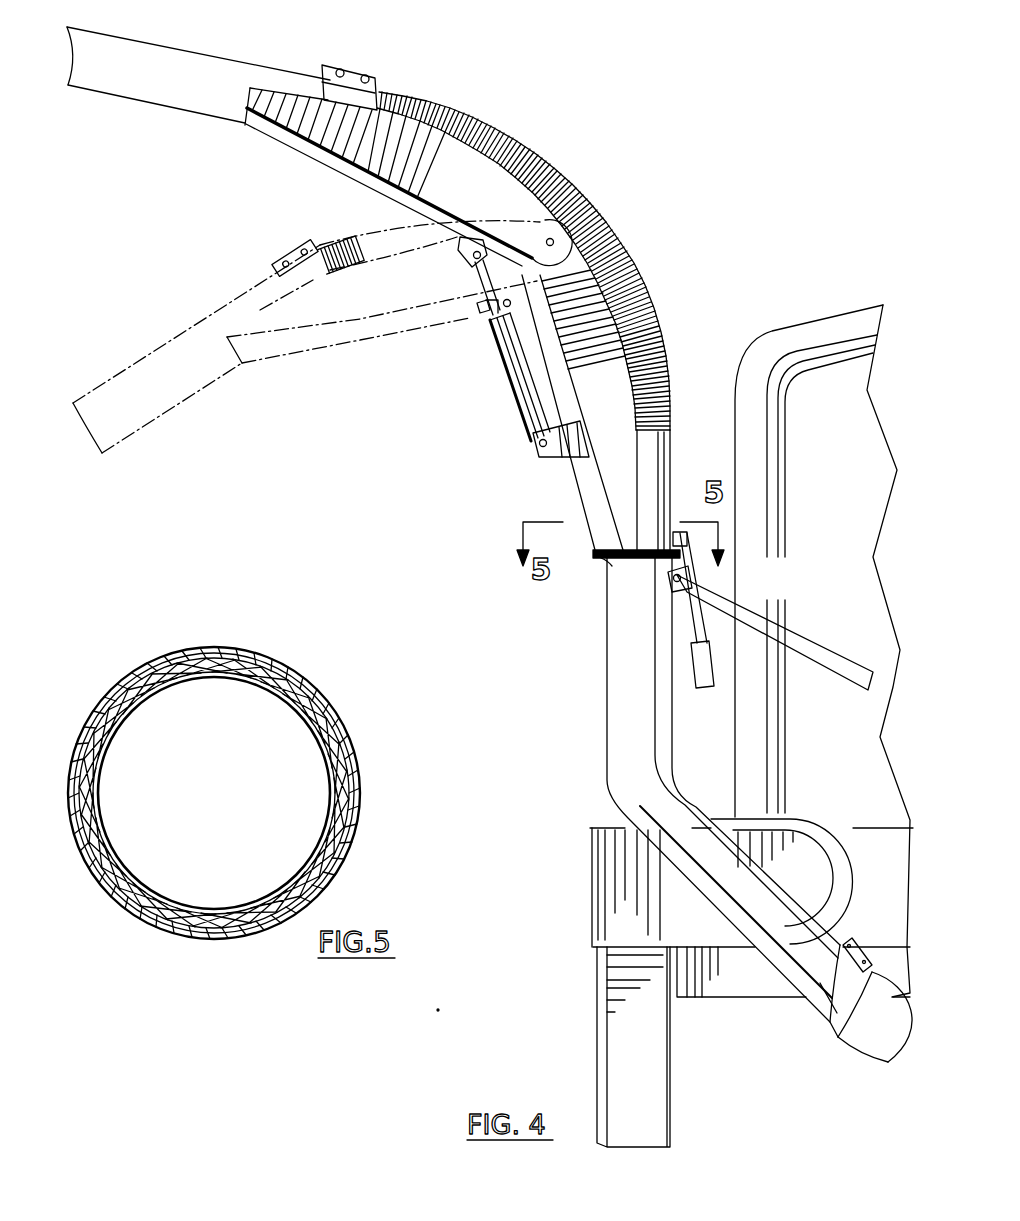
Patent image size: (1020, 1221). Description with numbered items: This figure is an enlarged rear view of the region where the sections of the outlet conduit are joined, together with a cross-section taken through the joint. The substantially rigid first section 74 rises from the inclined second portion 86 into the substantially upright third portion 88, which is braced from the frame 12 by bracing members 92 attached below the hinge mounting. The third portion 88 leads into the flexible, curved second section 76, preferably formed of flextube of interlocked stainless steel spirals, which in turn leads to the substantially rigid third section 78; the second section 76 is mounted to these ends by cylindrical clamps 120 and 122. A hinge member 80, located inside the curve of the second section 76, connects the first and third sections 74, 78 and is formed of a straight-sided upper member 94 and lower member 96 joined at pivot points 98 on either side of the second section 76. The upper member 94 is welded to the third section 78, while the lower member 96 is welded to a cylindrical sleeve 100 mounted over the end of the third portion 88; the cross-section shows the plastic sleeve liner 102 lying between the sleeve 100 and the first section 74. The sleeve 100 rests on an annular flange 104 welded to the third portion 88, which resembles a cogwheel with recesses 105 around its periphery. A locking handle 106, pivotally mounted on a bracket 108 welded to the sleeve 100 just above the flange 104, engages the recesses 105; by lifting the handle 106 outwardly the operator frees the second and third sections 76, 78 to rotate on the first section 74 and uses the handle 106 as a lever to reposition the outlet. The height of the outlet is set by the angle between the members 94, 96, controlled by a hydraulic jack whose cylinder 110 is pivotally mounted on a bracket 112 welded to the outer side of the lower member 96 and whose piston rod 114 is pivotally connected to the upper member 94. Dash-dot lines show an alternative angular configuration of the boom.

In FIG. 4, the third section 78 is at (203, 60).
In FIG. 4, the cylindrical clamp 122 is at (370, 77).
In FIG. 4, the upper member 94 is at (290, 150).
In FIG. 4, the pivot points 98 is at (546, 238).
In FIG. 4, the second section 76 is at (598, 220).
In FIG. 4, the piston rod 114 is at (482, 310).
In FIG. 4, the hinge member 80 is at (499, 356).
In FIG. 4, the cylinder 110 is at (514, 402).
In FIG. 4, the bracket 112 is at (537, 450).
In FIG. 4, the bracket 108 is at (672, 540).
In FIG. 4, the cylindrical clamp 120 is at (668, 430).
In FIG. 4, the cylindrical sleeve 100 is at (672, 458).
In FIG. 5, the cylindrical sleeve 100 is at (343, 735).
In FIG. 4, the lower member 96 is at (578, 488).
In FIG. 4, the recesses 105 is at (594, 550).
In FIG. 4, the annular flange 104 is at (592, 562).
In FIG. 4, the locking handle 106 is at (712, 600).
In FIG. 4, the third portion 88 is at (607, 670).
In FIG. 4, the bracing members 92 is at (815, 652).
In FIG. 4, the first section 74 is at (607, 794).
In FIG. 5, the first section 74 is at (240, 680).
In FIG. 4, the frame 12 is at (868, 920).
In FIG. 4, the second portion 86 is at (772, 950).
In FIG. 5, the sleeve liner 102 is at (357, 758).